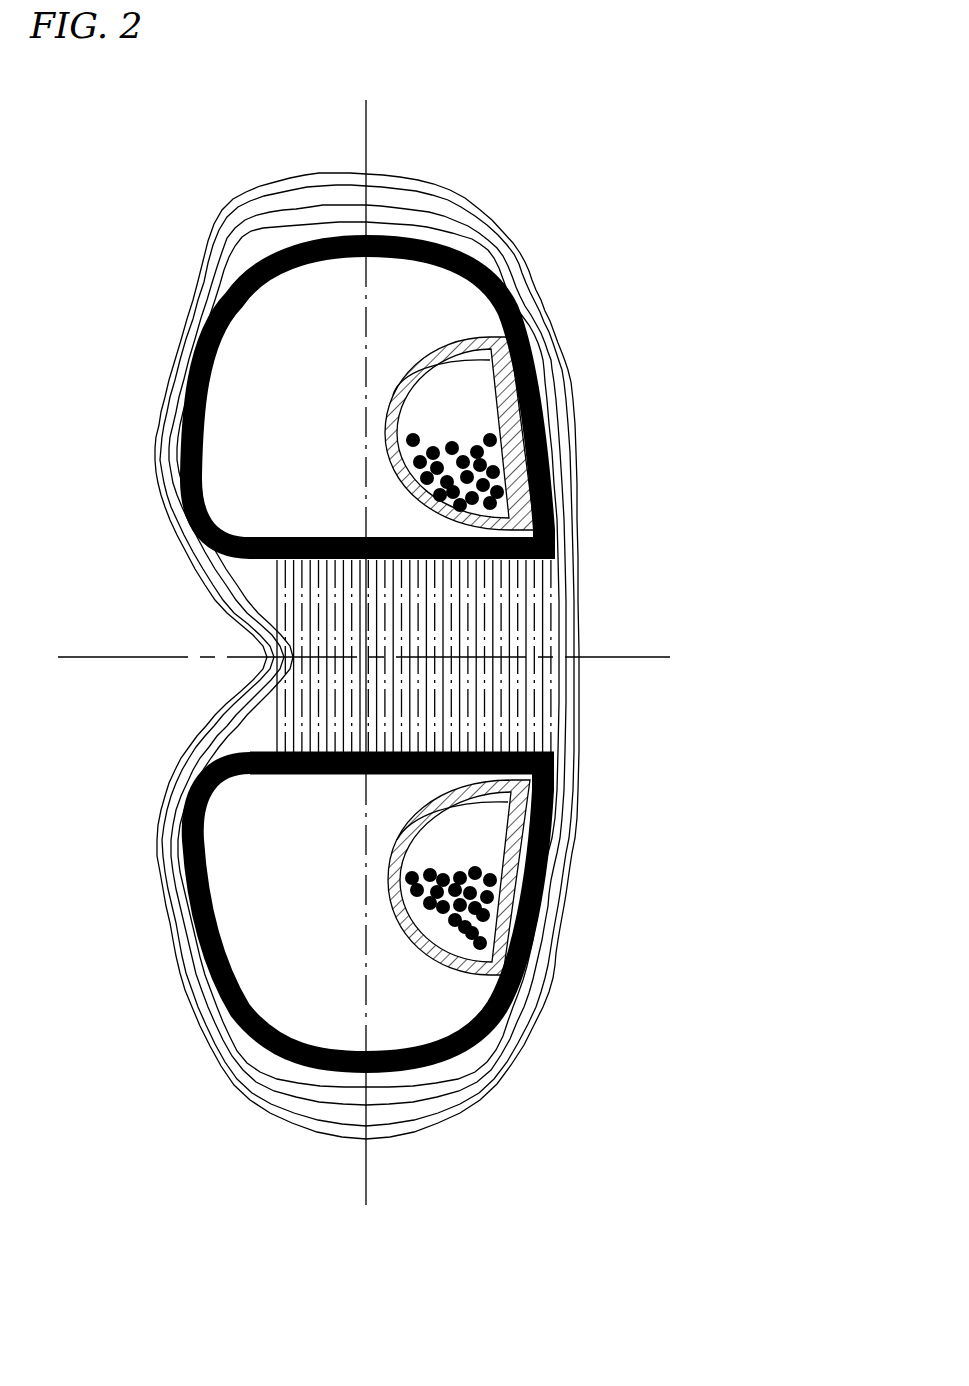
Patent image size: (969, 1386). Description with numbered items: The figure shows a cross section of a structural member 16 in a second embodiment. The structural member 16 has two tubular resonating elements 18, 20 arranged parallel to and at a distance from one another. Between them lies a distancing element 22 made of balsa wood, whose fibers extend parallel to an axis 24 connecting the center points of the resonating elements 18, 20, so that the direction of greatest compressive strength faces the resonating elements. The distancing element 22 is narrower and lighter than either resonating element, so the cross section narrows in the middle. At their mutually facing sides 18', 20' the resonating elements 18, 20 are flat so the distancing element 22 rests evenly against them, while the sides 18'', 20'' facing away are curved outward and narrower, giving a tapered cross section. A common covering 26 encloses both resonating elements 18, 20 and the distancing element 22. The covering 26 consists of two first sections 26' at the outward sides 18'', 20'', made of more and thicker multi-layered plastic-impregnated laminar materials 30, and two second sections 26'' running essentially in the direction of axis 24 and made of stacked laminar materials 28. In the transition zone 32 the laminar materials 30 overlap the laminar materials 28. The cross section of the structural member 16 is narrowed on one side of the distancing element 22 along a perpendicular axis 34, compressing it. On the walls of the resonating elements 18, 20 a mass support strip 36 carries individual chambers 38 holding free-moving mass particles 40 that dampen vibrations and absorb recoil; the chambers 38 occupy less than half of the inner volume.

The structural member 16 is at (385, 660).
The resonating element 18 is at (373, 966).
The side of resonating element facing the other resonating element 18' is at (402, 800).
The side of resonating element facing away 18'' is at (368, 912).
The resonating element 20 is at (381, 359).
The side of resonating element facing the other resonating element 20' is at (402, 507).
The side of resonating element facing away 20'' is at (367, 397).
The distancing element 22 is at (466, 654).
The axis 24 is at (402, 652).
The covering 26 is at (329, 696).
The first section of covering 26' is at (367, 619).
The second section of covering 26'' is at (408, 654).
The laminar materials of second sections 28 is at (398, 606).
The laminar materials of first sections 30 is at (295, 670).
The transition zone 32 is at (365, 647).
The perpendicular axis 34 is at (361, 689).
The mass support strip 36 is at (521, 655).
The chamber 38 is at (525, 616).
The mass particles 40 is at (528, 717).